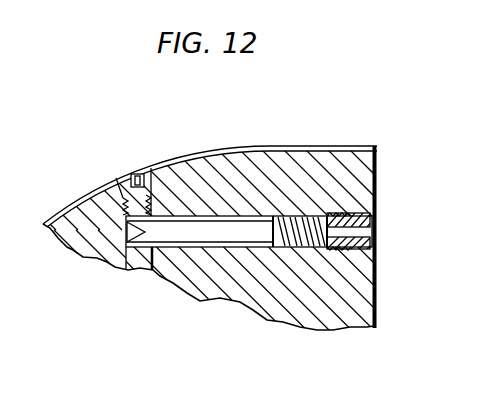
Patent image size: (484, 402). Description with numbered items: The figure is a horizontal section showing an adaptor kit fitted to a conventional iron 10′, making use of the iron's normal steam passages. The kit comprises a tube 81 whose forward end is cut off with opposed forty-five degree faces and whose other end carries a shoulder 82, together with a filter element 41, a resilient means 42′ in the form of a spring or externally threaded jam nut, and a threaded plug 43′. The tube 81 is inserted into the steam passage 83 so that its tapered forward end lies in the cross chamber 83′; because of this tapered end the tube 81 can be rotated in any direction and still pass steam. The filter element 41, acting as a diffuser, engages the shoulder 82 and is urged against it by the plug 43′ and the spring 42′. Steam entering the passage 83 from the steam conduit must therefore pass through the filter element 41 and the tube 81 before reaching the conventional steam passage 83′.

The conventional iron 10′ is at (205, 140).
The filter element 41 is at (274, 215).
The resilient means 42′ is at (309, 215).
The threaded plug 43′ is at (372, 217).
The tube 81 is at (193, 241).
The shoulder 82 is at (275, 248).
The steam passage 83 is at (307, 248).
The cross chamber 83′ is at (143, 268).